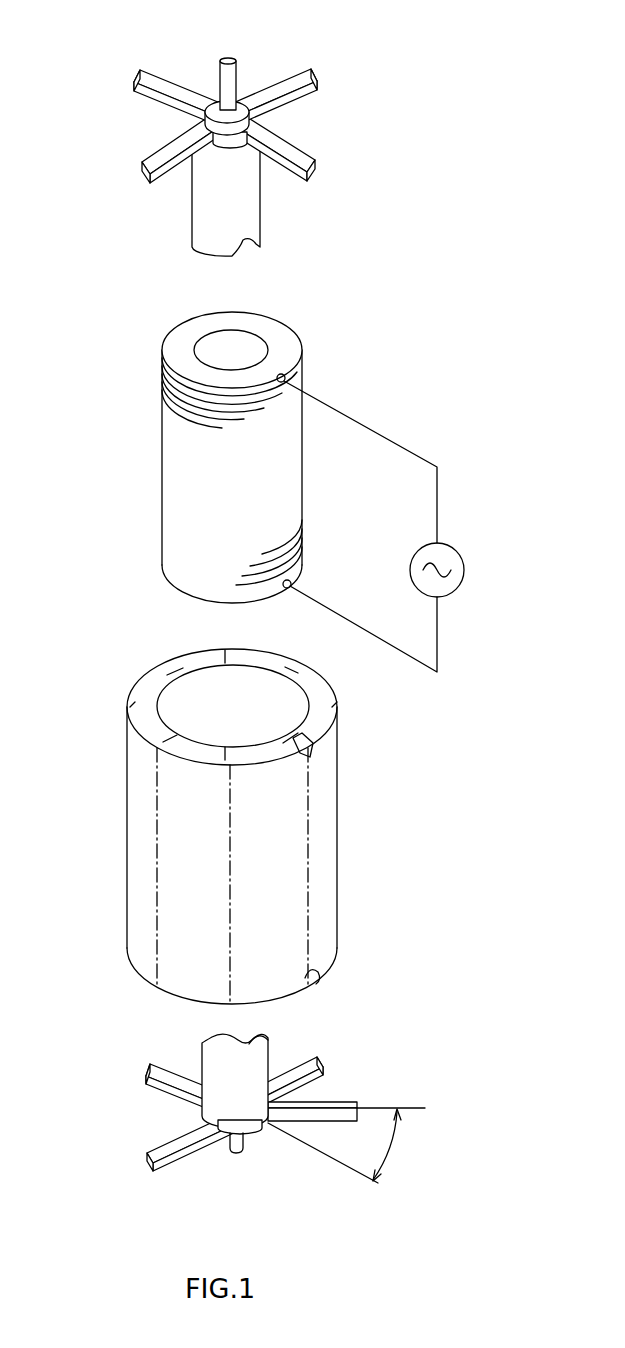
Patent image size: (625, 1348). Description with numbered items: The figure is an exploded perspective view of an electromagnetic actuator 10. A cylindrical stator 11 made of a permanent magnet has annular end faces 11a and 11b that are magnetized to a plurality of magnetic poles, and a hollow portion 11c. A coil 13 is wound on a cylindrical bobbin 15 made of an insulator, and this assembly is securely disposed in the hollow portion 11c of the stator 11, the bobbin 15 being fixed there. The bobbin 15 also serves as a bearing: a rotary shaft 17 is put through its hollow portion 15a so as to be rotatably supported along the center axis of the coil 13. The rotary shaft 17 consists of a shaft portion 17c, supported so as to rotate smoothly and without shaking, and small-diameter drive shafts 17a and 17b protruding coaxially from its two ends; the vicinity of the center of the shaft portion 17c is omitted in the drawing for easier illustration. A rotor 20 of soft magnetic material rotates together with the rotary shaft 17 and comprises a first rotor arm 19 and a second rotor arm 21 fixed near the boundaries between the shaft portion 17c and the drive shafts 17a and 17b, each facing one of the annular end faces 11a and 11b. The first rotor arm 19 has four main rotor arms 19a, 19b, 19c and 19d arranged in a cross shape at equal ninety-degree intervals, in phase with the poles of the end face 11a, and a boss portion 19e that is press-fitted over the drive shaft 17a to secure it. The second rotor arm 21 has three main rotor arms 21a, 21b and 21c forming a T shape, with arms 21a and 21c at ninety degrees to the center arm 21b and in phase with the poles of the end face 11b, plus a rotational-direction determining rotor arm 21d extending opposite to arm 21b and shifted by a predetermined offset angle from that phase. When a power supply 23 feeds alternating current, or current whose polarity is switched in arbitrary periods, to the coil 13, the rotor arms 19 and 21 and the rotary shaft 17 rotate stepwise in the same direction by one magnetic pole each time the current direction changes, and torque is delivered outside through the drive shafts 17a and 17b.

The motor device 10 is at (487, 170).
The stator 11 is at (232, 803).
The annular end face 11a is at (130, 695).
The annular end face 11b is at (320, 975).
The hollow portion 11c is at (178, 685).
The coil 13 is at (163, 402).
The bobbin 15 is at (218, 440).
The hollow portion 15a is at (247, 347).
The rotary shaft 17 is at (268, 195).
The drive shaft 17a is at (238, 72).
The drive shaft 17b is at (233, 1152).
The shaft portion 17c is at (253, 218).
The first rotor arm 19 is at (158, 122).
The main rotor arm 19a is at (140, 167).
The main rotor arm 19b is at (157, 76).
The main rotor arm 19c is at (313, 78).
The main rotor arm 19d is at (315, 170).
The boss portion 19e is at (217, 100).
The rotor 20 is at (338, 93).
The second rotor arm 21 is at (185, 1108).
The main rotor arm 21a is at (147, 1157).
The main rotor arm 21b is at (160, 1070).
The main rotor arm 21c is at (320, 1062).
The rotational-direction determining rotor arm 21d is at (348, 1100).
The power supply 23 is at (463, 572).